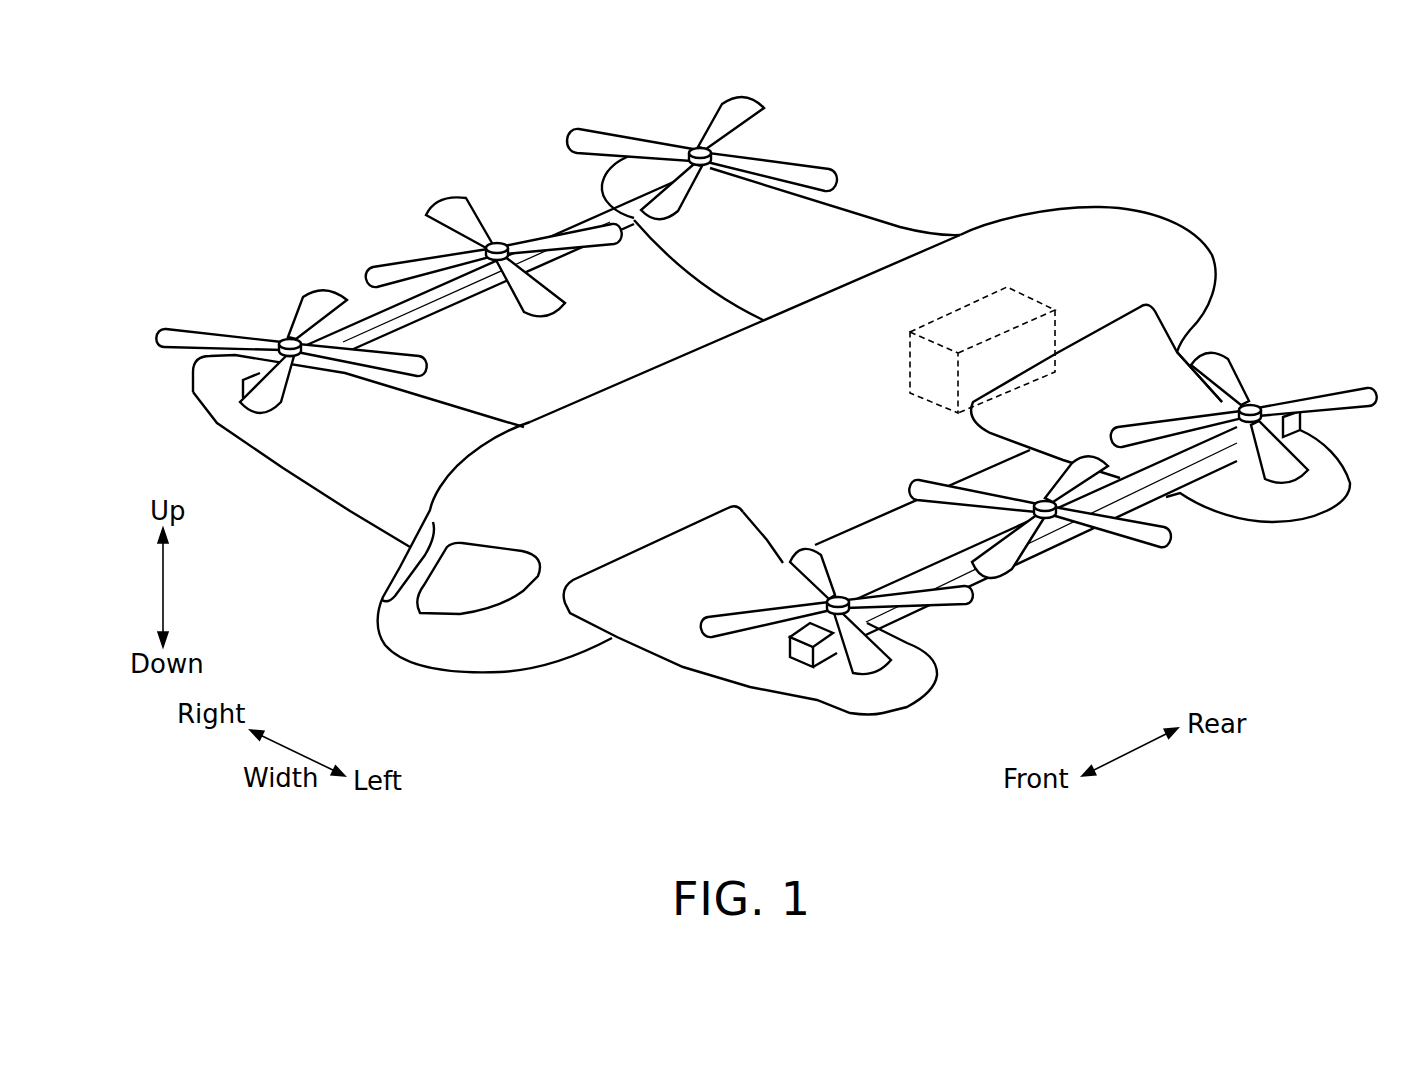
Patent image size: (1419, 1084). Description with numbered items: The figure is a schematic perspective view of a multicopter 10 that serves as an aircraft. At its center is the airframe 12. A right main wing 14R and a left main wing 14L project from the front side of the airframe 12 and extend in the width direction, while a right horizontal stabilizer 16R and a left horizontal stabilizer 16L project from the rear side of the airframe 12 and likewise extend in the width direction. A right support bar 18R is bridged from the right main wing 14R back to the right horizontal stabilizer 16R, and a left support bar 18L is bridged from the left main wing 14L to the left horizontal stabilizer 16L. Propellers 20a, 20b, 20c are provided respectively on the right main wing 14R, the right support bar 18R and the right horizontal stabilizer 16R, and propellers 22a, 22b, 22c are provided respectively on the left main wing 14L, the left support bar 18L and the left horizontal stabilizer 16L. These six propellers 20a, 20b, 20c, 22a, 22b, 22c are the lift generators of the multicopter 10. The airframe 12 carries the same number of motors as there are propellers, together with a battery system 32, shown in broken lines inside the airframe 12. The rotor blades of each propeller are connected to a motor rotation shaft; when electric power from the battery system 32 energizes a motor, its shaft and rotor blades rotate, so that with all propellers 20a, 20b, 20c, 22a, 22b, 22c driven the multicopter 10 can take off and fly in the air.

The multicopter 10 is at (780, 430).
The airframe 12 is at (430, 647).
The right main wing 14R is at (283, 452).
The left main wing 14L is at (710, 662).
The right horizontal stabilizer 16R is at (692, 262).
The left horizontal stabilizer 16L is at (1293, 500).
The right support bar 18R is at (450, 308).
The left support bar 18L is at (1213, 470).
The propeller 20a is at (190, 333).
The propeller 20b is at (447, 203).
The propeller 20c is at (603, 143).
The propeller 22a is at (865, 662).
The propeller 22b is at (1137, 537).
The propeller 22c is at (1363, 410).
The battery system 32 is at (1032, 298).